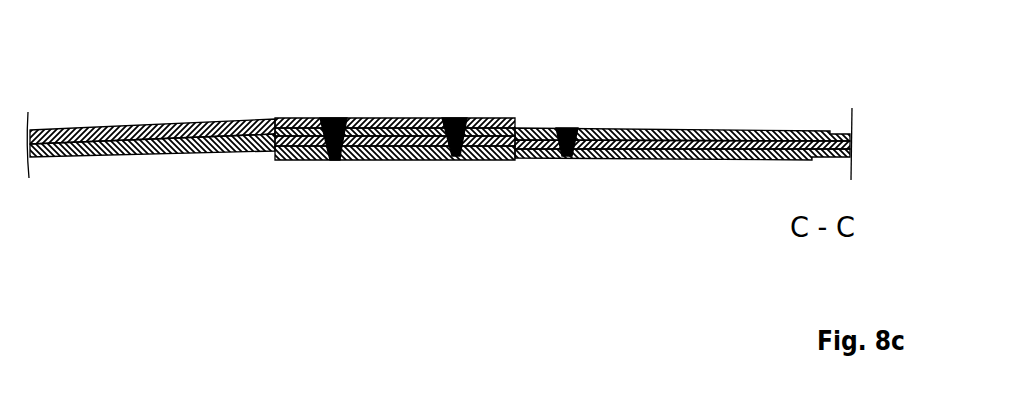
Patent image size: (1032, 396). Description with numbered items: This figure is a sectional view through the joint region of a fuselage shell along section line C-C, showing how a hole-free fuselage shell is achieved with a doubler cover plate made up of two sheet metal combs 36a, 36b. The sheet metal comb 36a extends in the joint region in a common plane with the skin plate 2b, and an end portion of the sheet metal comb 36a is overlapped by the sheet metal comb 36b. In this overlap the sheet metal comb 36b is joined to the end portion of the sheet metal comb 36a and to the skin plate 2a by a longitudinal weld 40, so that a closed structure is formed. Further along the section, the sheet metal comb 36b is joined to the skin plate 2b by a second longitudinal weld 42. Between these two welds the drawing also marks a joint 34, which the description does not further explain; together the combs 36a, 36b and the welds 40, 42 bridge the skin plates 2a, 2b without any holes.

The skin plate 2a is at (259, 119).
The skin plate 2b is at (612, 128).
The weld joint 34 is at (454, 118).
The sheet metal comb 36a is at (191, 156).
The sheet metal comb 36b is at (673, 159).
The longitudinal weld 40 is at (332, 118).
The longitudinal weld 42 is at (559, 128).